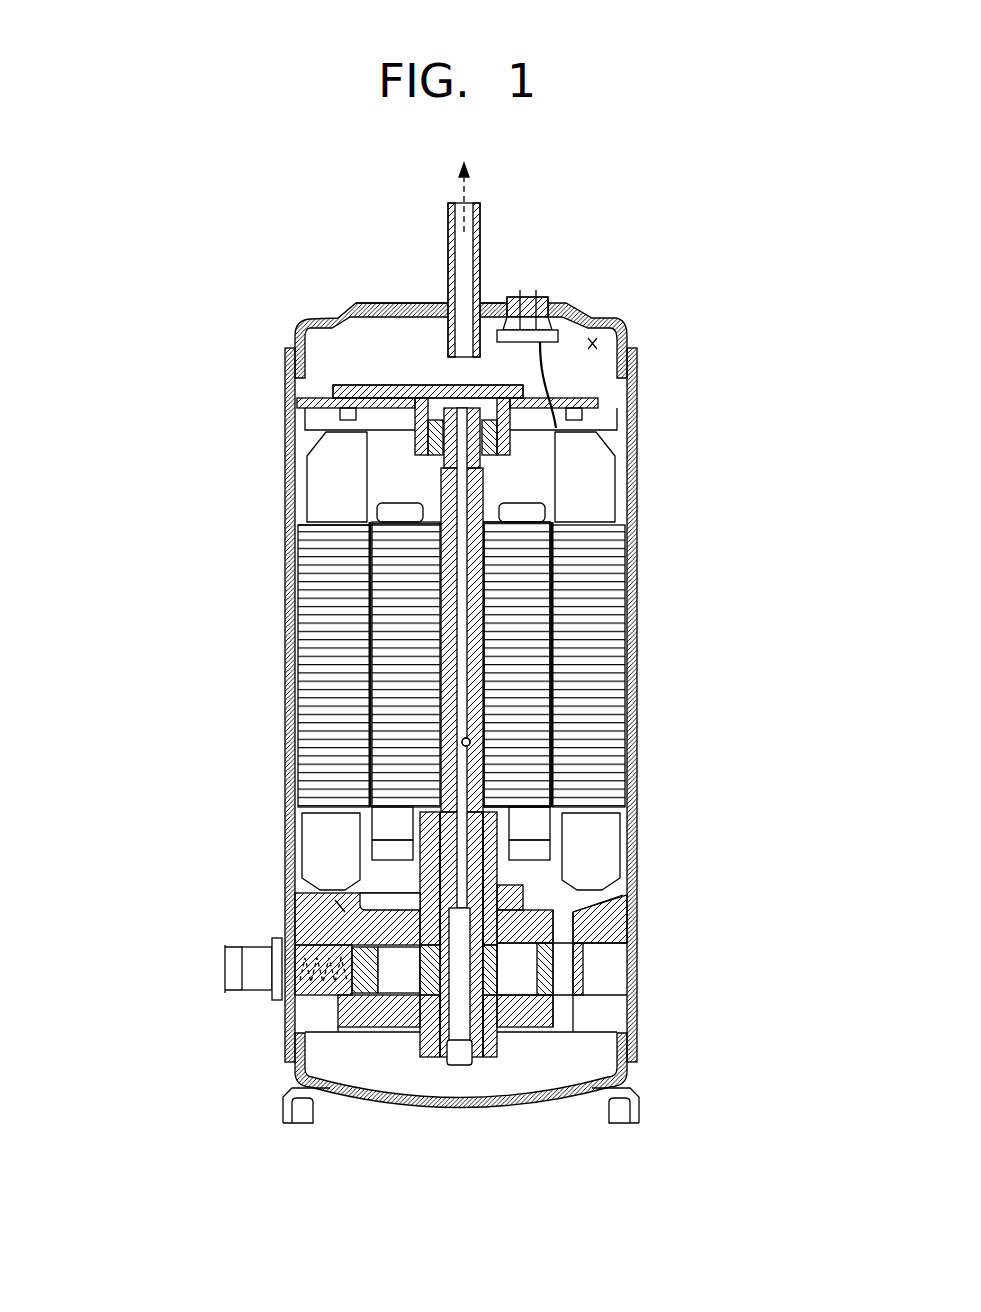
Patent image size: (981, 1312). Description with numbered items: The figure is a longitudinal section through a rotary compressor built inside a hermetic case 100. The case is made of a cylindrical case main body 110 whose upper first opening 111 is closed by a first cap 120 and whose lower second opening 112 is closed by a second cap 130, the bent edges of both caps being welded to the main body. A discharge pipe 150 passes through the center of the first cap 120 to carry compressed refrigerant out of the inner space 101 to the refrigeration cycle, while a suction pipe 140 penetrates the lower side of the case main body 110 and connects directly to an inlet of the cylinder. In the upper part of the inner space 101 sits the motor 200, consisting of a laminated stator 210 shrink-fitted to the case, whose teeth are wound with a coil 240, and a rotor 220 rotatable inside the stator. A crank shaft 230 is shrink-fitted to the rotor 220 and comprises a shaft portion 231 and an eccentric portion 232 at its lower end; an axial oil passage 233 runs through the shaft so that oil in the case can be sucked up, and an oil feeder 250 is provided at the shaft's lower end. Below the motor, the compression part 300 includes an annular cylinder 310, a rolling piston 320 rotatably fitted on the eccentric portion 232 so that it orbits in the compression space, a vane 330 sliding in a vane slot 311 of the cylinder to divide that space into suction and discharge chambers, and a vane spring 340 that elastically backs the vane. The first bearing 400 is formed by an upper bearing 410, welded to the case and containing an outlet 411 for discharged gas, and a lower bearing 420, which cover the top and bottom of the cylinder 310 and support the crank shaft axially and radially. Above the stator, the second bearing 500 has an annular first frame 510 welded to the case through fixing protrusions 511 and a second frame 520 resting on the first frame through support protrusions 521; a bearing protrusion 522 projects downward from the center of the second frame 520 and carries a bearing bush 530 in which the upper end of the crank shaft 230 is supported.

The hermetic case 100 is at (276, 494).
The inner space 101 is at (594, 338).
The case main body 110 is at (290, 770).
The first opening 111 is at (290, 348).
The second opening 112 is at (285, 1075).
The first cap 120 is at (415, 305).
The second cap 130 is at (382, 1103).
The suction pipe 140 is at (240, 968).
The discharge pipe 150 is at (483, 236).
The motor 200 is at (185, 593).
The stator 210 is at (308, 608).
The rotor 220 is at (383, 648).
The crank shaft 230 is at (306, 688).
The shaft portion 231 is at (556, 640).
The eccentric portion 232 is at (612, 893).
The oil passage 233 is at (472, 745).
The coil 240 is at (320, 450).
The oil feeder 250 is at (468, 1052).
The compression part 300 is at (113, 903).
The cylinder 310 is at (325, 938).
The vane slot 311 is at (395, 990).
The rolling piston 320 is at (412, 1003).
The vane 330 is at (365, 930).
The vane spring 340 is at (300, 1002).
The first bearing 400 is at (715, 918).
The upper bearing 410 is at (560, 930).
The outlet 411 is at (335, 905).
The lower bearing 420 is at (565, 1010).
The second bearing 500 is at (735, 387).
The first frame 510 is at (600, 410).
The fixing protrusions 511 is at (285, 392).
The second frame 520 is at (598, 397).
The support protrusions 521 is at (385, 385).
The bearing protrusion 522 is at (423, 447).
The bearing bush 530 is at (497, 455).